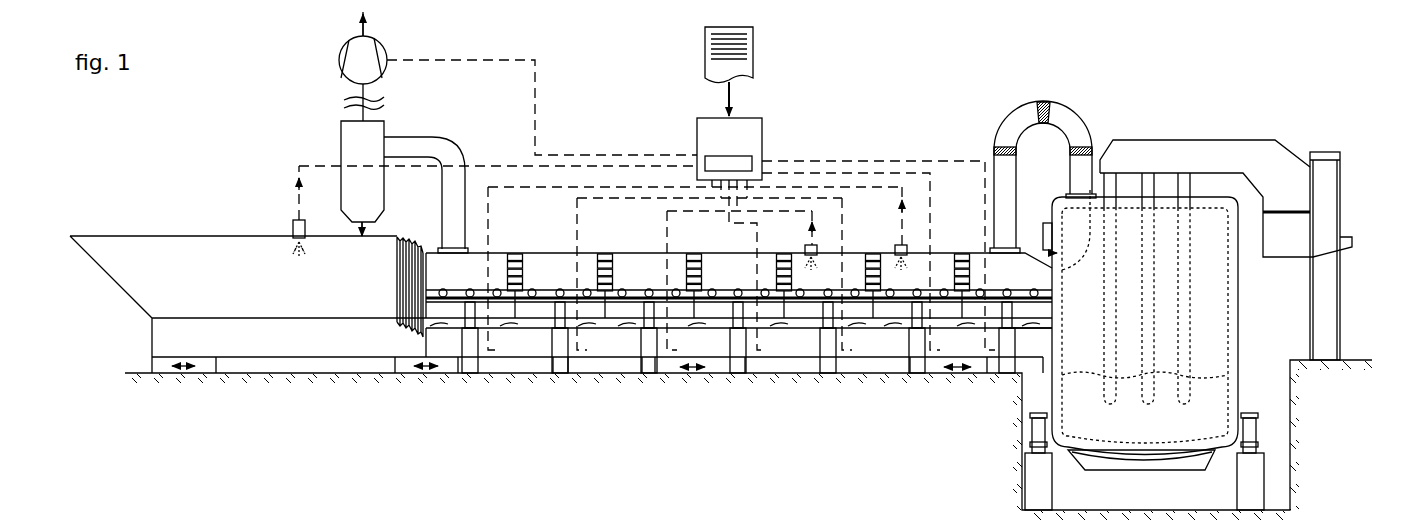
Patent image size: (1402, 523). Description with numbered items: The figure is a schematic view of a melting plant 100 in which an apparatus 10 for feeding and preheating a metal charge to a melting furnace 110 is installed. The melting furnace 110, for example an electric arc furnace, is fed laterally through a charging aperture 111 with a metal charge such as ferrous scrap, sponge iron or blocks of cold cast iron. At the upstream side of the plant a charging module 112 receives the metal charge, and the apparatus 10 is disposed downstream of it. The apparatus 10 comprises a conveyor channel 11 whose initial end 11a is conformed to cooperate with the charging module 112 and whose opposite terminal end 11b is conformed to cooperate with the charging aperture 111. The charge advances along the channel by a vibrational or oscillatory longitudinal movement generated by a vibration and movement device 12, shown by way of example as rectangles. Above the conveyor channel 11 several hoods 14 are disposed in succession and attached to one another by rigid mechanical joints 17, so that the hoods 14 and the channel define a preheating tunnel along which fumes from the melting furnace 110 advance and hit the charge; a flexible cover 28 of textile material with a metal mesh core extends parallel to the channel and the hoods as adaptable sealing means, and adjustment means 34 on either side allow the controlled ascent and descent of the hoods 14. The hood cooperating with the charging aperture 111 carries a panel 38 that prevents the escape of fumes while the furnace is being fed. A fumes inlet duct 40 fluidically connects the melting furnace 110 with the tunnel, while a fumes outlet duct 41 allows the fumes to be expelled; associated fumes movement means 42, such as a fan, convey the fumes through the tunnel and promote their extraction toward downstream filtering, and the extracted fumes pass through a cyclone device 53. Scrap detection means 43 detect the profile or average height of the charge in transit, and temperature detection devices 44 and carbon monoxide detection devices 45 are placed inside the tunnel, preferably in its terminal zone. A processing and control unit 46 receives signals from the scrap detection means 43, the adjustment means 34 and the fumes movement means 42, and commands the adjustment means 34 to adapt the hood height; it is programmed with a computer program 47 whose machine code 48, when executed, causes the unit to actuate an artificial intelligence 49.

The melting plant 100 is at (897, 47).
The apparatus 10 is at (870, 145).
The conveyor channel 11 is at (511, 376).
The initial end 11a is at (432, 343).
The terminal end 11b is at (1042, 347).
The vibration and movement device 12 is at (209, 367).
The hoods 14 is at (531, 250).
The mechanical joints 17 is at (587, 275).
The flexible cover 28 is at (602, 323).
The adjustment means 34 is at (551, 362).
The panel 38 is at (1045, 240).
The fumes inlet duct 40 is at (1067, 120).
The fumes outlet duct 41 is at (455, 188).
The fumes movement means 42 is at (372, 58).
The scrap detection means 43 is at (297, 228).
The temperature detection devices 44 is at (812, 246).
The carbon monoxide detection devices 45 is at (902, 246).
The processing and control unit 46 is at (685, 117).
The computer program 47 is at (706, 33).
The machine code 48 is at (740, 47).
The artificial intelligence 49 is at (745, 162).
The cyclone device 53 is at (352, 140).
The melting furnace 110 is at (1215, 140).
The charging aperture 111 is at (1090, 150).
The charging module 112 is at (170, 235).